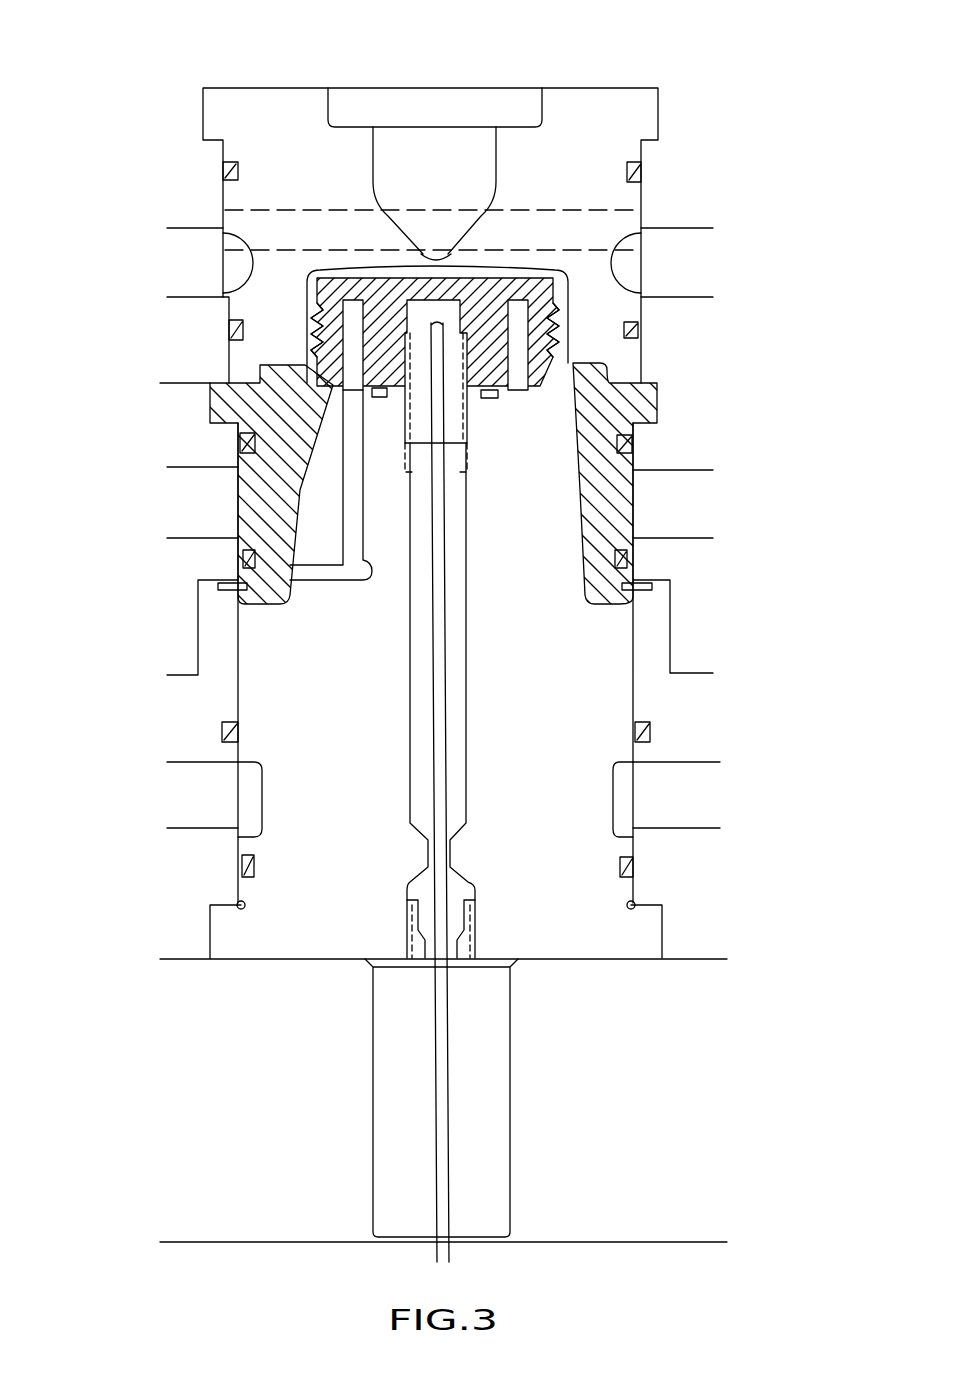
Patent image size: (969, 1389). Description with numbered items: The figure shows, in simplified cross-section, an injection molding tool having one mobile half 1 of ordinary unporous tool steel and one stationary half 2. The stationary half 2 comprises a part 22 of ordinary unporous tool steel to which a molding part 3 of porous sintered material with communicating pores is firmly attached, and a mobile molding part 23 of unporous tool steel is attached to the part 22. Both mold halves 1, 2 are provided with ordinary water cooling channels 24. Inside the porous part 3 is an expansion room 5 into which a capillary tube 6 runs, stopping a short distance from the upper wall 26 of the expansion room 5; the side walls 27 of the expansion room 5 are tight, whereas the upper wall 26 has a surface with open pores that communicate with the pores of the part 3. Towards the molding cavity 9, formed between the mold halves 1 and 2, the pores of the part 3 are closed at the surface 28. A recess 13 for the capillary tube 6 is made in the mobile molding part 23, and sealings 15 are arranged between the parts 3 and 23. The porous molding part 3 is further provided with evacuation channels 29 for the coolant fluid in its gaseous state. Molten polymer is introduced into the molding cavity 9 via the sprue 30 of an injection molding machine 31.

The mobile half 1 is at (660, 122).
The stationary half 2 is at (635, 848).
The molding part 3 is at (545, 288).
The expansion room 5 is at (387, 272).
The capillary tube 6 is at (449, 657).
The molding cavity 9 is at (405, 305).
The recess 13 is at (468, 702).
The sealings 15 is at (384, 396).
The part 22 is at (310, 880).
The mobile molding part 23 is at (637, 413).
The water cooling channels 24 is at (193, 250).
The upper wall 26 is at (490, 268).
The side walls 27 is at (407, 310).
The surface 28 is at (317, 267).
The evacuation channels 29 is at (338, 336).
The sprue 30 is at (470, 256).
The injection molding machine 31 is at (503, 100).